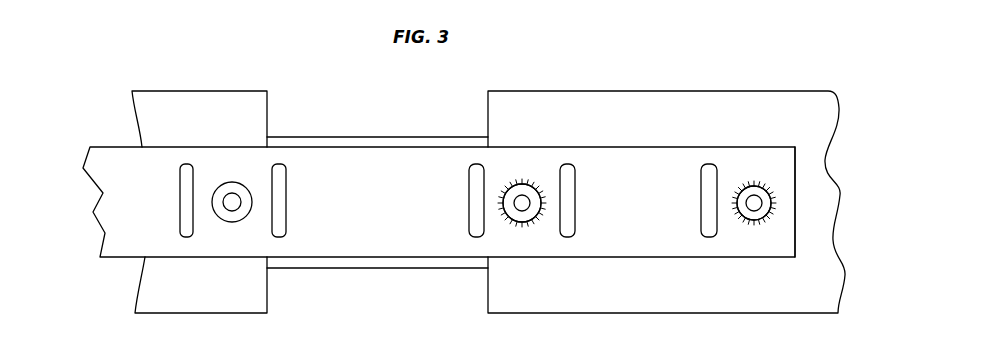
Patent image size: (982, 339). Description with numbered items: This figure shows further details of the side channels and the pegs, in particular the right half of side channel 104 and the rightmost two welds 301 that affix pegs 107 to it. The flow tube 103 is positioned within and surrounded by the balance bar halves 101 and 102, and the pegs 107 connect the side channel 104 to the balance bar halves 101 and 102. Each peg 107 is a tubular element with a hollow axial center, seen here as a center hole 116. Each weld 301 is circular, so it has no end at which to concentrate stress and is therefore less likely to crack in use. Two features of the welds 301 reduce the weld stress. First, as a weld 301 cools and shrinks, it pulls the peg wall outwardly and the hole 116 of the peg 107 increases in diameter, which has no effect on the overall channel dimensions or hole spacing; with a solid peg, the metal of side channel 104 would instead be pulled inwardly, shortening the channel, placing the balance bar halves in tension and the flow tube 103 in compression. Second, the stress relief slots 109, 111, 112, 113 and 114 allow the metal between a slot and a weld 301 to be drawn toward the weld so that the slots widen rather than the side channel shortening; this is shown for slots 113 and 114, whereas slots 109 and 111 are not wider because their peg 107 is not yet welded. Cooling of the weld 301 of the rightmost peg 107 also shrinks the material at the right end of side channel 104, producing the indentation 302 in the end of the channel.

The balance bar half 101 is at (188, 102).
The balance bar half 102 is at (692, 100).
The flow tube 103 is at (329, 145).
The side channel 104 is at (413, 168).
The peg 107 is at (232, 215).
The slot 109 is at (180, 185).
The slot 111 is at (287, 200).
The slot 112 is at (470, 205).
The slot 113 is at (575, 205).
The slot 114 is at (701, 200).
The center hole 116 is at (523, 211).
The weld 301 is at (509, 220).
The indentation 302 is at (794, 200).